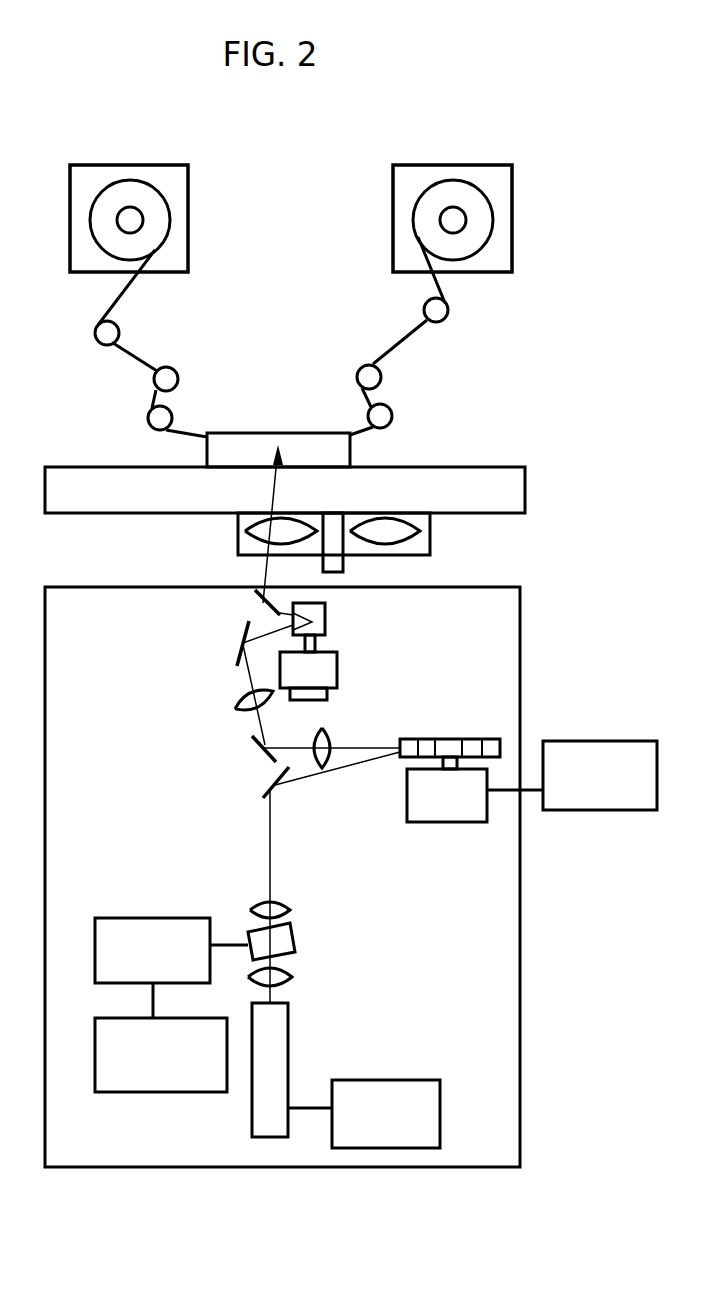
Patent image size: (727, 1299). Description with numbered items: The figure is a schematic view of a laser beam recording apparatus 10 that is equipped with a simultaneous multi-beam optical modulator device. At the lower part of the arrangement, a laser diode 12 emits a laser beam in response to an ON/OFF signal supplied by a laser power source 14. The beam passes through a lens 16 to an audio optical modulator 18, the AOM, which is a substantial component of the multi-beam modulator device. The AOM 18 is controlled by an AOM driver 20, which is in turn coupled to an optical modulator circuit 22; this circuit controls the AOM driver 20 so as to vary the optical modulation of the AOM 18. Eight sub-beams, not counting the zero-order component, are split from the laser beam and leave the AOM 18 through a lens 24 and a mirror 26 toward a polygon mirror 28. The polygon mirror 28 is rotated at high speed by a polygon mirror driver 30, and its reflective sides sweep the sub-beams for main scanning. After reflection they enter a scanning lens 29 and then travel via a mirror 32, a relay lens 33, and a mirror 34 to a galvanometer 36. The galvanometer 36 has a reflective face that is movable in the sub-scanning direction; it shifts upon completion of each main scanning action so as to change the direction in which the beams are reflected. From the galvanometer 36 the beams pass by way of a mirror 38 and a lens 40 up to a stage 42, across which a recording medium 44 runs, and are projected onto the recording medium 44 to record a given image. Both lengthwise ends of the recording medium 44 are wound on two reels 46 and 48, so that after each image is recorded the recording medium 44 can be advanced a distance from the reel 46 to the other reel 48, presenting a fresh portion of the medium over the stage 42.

The laser beam recording apparatus 10 is at (88, 436).
The laser diode 12 is at (252, 1113).
The laser power source 14 is at (440, 1113).
The lens 16 is at (293, 981).
The audio optical modulator 18 is at (296, 938).
The AOM driver 20 is at (165, 918).
The optical modulator circuit 22 is at (152, 1092).
The lens 24 is at (287, 903).
The mirror 26 is at (268, 781).
The polygon mirror 28 is at (439, 728).
The scanning lens 29 is at (330, 737).
The polygon mirror driver 30 is at (595, 741).
The mirror 32 is at (254, 748).
The relay lens 33 is at (234, 706).
The mirror 34 is at (241, 651).
The galvanometer 36 is at (350, 670).
The mirror 38 is at (258, 601).
The lens 40 is at (248, 540).
The stage 42 is at (353, 437).
The recording medium 44 is at (386, 352).
The reel 46 is at (143, 215).
The reel 48 is at (466, 214).